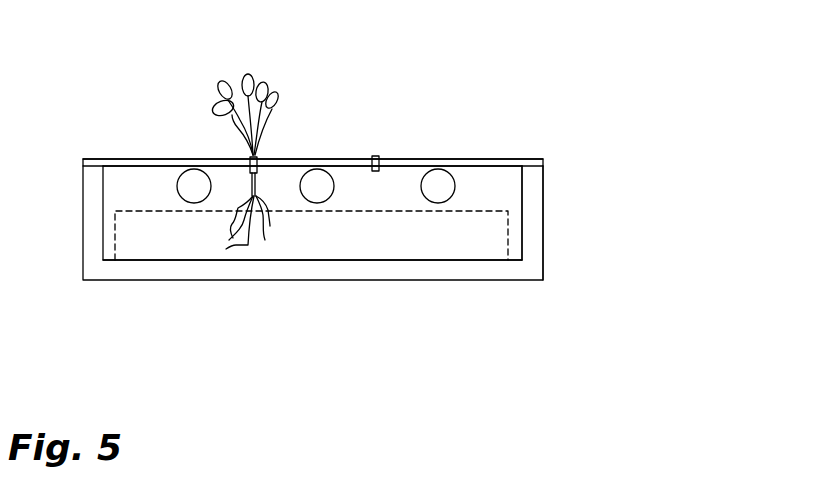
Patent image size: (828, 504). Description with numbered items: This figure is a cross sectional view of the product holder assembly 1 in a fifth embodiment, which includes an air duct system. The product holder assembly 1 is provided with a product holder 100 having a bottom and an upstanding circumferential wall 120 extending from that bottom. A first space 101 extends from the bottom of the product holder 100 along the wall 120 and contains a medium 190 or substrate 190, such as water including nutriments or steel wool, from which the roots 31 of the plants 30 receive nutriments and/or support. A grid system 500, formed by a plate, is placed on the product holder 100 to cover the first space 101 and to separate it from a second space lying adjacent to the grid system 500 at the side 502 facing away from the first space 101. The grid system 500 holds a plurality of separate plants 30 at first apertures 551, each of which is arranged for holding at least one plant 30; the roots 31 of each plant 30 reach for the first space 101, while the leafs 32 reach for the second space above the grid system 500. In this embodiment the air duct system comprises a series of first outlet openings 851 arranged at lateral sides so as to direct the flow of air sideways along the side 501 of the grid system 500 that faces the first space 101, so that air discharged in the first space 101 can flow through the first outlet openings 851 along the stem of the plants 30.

The product holder assembly 1 is at (535, 342).
The plant 30 is at (205, 108).
The roots 31 is at (226, 249).
The leafs 32 is at (227, 92).
The product holder 100 is at (533, 279).
The first space 101 is at (515, 242).
The upstanding circumferential wall 120 is at (532, 248).
The medium or substrate 190 is at (147, 240).
The grid system 500 is at (507, 160).
The side of the grid system facing the first space 501 is at (497, 168).
The side of the grid system facing away from the first space 502 is at (487, 157).
The first apertures 551 is at (375, 155).
The first outlet openings 851 is at (177, 186).